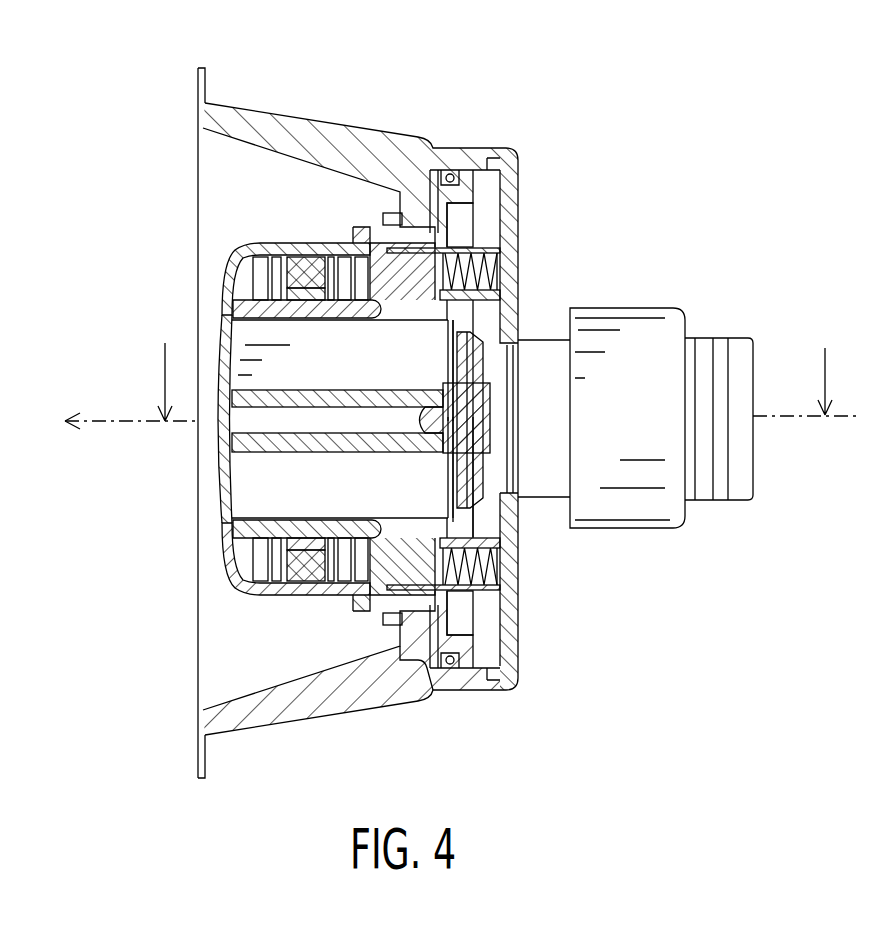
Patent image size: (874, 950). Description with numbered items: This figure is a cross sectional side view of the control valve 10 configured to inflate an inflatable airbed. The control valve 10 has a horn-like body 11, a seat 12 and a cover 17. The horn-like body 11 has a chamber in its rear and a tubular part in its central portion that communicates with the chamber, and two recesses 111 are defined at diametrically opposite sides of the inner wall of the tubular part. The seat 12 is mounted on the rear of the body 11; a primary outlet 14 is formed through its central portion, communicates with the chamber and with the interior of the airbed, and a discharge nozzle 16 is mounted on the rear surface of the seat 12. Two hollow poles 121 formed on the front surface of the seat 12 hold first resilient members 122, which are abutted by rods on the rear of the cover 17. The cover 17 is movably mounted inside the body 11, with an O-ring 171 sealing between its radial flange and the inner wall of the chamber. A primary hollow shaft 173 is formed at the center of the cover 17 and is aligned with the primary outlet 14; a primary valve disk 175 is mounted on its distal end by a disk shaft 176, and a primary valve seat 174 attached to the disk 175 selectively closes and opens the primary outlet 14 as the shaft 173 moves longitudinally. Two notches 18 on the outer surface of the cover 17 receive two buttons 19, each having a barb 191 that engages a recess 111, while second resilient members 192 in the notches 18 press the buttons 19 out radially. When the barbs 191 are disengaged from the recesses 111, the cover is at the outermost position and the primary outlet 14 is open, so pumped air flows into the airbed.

The control valve 10 is at (300, 78).
The horn-like body 11 is at (333, 130).
The recess 111 is at (425, 688).
The seat 12 is at (512, 197).
The hollow pole 121 is at (495, 288).
The first resilient member 122 is at (495, 262).
The primary outlet 14 is at (515, 430).
The discharge nozzle 16 is at (670, 323).
The cover 17 is at (263, 527).
The O-ring 171 is at (453, 175).
The primary hollow shaft 173 is at (342, 447).
The primary valve seat 174 is at (497, 333).
The primary valve disk 175 is at (458, 352).
The disk shaft 176 is at (423, 417).
The notch 18 is at (232, 288).
The button 19 is at (250, 240).
The barb 191 is at (390, 622).
The second resilient member 192 is at (303, 597).